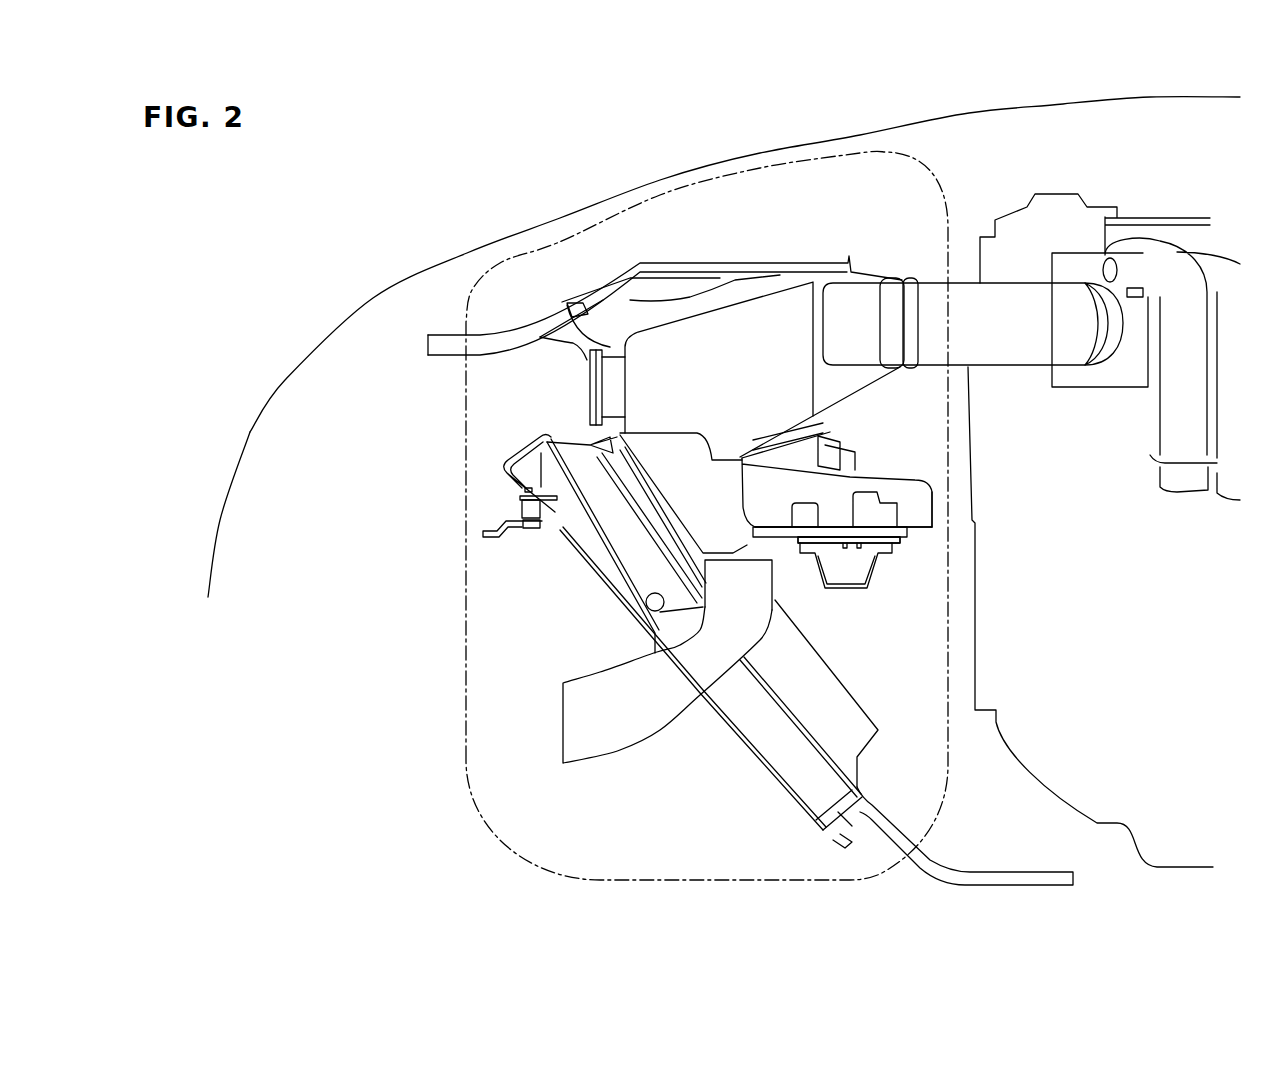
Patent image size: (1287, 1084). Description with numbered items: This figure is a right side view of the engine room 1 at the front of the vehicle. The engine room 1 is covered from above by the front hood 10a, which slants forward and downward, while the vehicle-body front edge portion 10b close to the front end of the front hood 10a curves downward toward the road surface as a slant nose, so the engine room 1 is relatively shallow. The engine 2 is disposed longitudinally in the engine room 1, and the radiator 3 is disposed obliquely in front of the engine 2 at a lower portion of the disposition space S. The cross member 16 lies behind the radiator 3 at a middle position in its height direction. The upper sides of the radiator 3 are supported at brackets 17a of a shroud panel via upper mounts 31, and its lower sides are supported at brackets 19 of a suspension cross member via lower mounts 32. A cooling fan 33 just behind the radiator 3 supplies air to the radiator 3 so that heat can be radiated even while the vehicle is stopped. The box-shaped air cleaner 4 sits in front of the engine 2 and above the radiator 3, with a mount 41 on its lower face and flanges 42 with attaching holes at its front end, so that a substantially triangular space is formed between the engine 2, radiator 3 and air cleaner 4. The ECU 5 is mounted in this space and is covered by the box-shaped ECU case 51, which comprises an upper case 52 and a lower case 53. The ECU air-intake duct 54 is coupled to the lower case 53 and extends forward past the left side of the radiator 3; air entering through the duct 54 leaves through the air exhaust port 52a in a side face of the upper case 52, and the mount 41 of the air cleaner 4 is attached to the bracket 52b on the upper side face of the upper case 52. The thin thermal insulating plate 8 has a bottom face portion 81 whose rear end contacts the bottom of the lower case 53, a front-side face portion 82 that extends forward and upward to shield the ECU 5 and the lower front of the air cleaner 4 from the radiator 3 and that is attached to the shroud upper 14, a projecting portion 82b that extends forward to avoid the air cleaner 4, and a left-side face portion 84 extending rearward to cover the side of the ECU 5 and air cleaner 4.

The engine room 1 is at (1160, 150).
The engine 2 is at (1012, 208).
The radiator 3 is at (727, 721).
The air cleaner 4 is at (590, 397).
The engine control unit (ECU) 5 is at (867, 505).
The thermal insulating plate 8 is at (787, 546).
The bottom face portion 81 is at (849, 540).
The front hood 10a is at (467, 252).
The vehicle-body front edge portion 10b is at (252, 432).
The shroud upper 14 is at (445, 334).
The cross member 16 is at (886, 572).
The bracket 17a is at (490, 540).
The bracket 19 is at (1010, 871).
The upper mount 31 is at (520, 508).
The lower mount 32 is at (853, 828).
The cooling fan 33 is at (850, 693).
The mount 41 is at (833, 456).
The flange 42 is at (565, 343).
The ECU case 51 is at (937, 491).
The upper case 52 is at (917, 476).
The air exhaust port 52a is at (897, 517).
The bracket 52b is at (850, 462).
The lower case 53 is at (907, 538).
The ECU air-intake duct 54 is at (585, 678).
The front-side face portion 82 is at (667, 505).
The projecting portion 82b is at (598, 437).
The left-side face portion 84 is at (718, 512).
The disposition space S is at (467, 450).